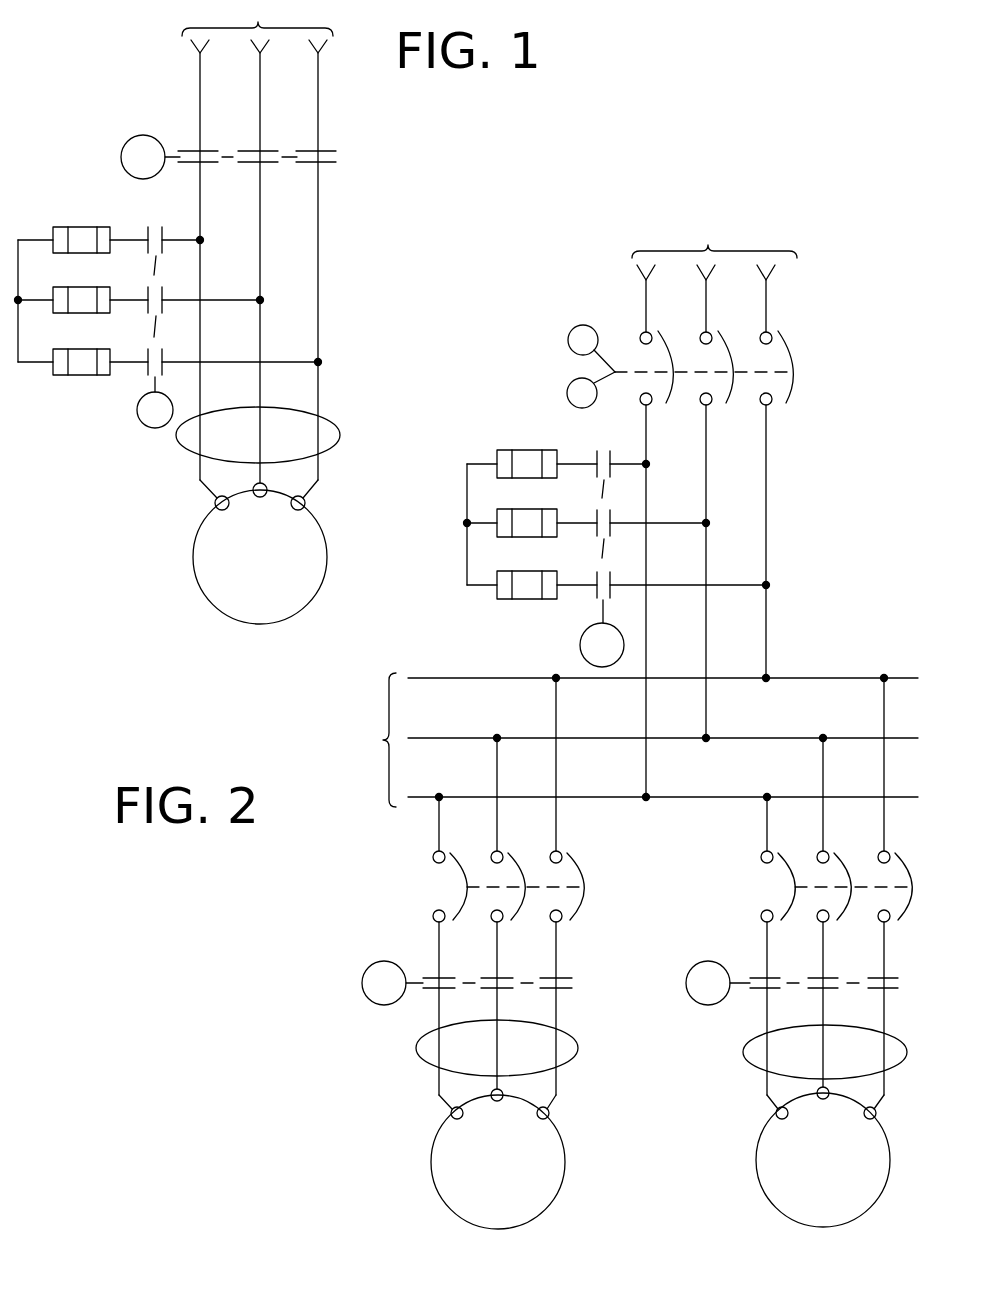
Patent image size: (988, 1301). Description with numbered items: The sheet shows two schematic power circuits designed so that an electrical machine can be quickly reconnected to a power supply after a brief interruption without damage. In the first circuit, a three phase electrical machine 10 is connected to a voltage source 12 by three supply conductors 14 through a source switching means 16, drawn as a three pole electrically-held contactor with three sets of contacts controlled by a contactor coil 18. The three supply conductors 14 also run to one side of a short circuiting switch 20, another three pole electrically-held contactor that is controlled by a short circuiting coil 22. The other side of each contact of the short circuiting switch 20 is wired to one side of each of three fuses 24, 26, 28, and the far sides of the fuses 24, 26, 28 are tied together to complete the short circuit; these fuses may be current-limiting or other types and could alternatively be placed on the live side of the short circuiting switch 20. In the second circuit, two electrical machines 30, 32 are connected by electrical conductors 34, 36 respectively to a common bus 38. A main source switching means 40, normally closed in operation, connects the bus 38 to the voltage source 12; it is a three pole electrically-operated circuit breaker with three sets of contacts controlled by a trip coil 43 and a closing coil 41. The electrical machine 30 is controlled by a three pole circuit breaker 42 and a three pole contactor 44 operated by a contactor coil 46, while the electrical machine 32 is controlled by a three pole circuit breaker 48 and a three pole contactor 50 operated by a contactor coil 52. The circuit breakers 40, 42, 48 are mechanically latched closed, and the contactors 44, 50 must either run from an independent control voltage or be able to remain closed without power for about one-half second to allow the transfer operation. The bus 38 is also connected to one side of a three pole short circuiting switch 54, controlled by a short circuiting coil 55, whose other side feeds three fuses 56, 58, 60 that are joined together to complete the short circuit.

In FIG. 1, the three phase electrical machine 10 is at (263, 623).
In FIG. 1, the voltage source 12 is at (257, 241).
In FIG. 2, the voltage source 12 is at (714, 272).
In FIG. 1, the supply conductors 14 is at (340, 435).
In FIG. 1, the source switching means 16 is at (209, 164).
In FIG. 1, the contactor coil 18 is at (138, 134).
In FIG. 1, the short circuiting switch 20 is at (155, 224).
In FIG. 1, the short circuiting coil 22 is at (155, 428).
In FIG. 1, the fuse 24 is at (61, 233).
In FIG. 1, the fuse 26 is at (60, 298).
In FIG. 1, the fuse 28 is at (62, 358).
In FIG. 2, the electrical machine 30 is at (518, 1229).
In FIG. 2, the electrical machine 32 is at (796, 1226).
In FIG. 2, the electrical conductors 34 is at (578, 1048).
In FIG. 2, the electrical conductors 36 is at (745, 1054).
In FIG. 2, the common bus 38 is at (631, 740).
In FIG. 2, the main source switching means 40 is at (665, 327).
In FIG. 2, the closing coil 41 is at (576, 321).
In FIG. 2, the three pole circuit breaker 42 is at (466, 887).
In FIG. 2, the trip coil 43 is at (567, 385).
In FIG. 2, the three pole contactor 44 is at (447, 992).
In FIG. 2, the contactor coil 46 is at (365, 995).
In FIG. 2, the three pole circuit breaker 48 is at (783, 887).
In FIG. 2, the three pole contactor 50 is at (780, 992).
In FIG. 2, the contactor coil 52 is at (691, 992).
In FIG. 2, the three pole short circuiting switch 54 is at (604, 452).
In FIG. 2, the short circuiting coil 55 is at (580, 645).
In FIG. 2, the fuse 56 is at (510, 456).
In FIG. 2, the fuse 58 is at (507, 516).
In FIG. 2, the fuse 60 is at (510, 575).